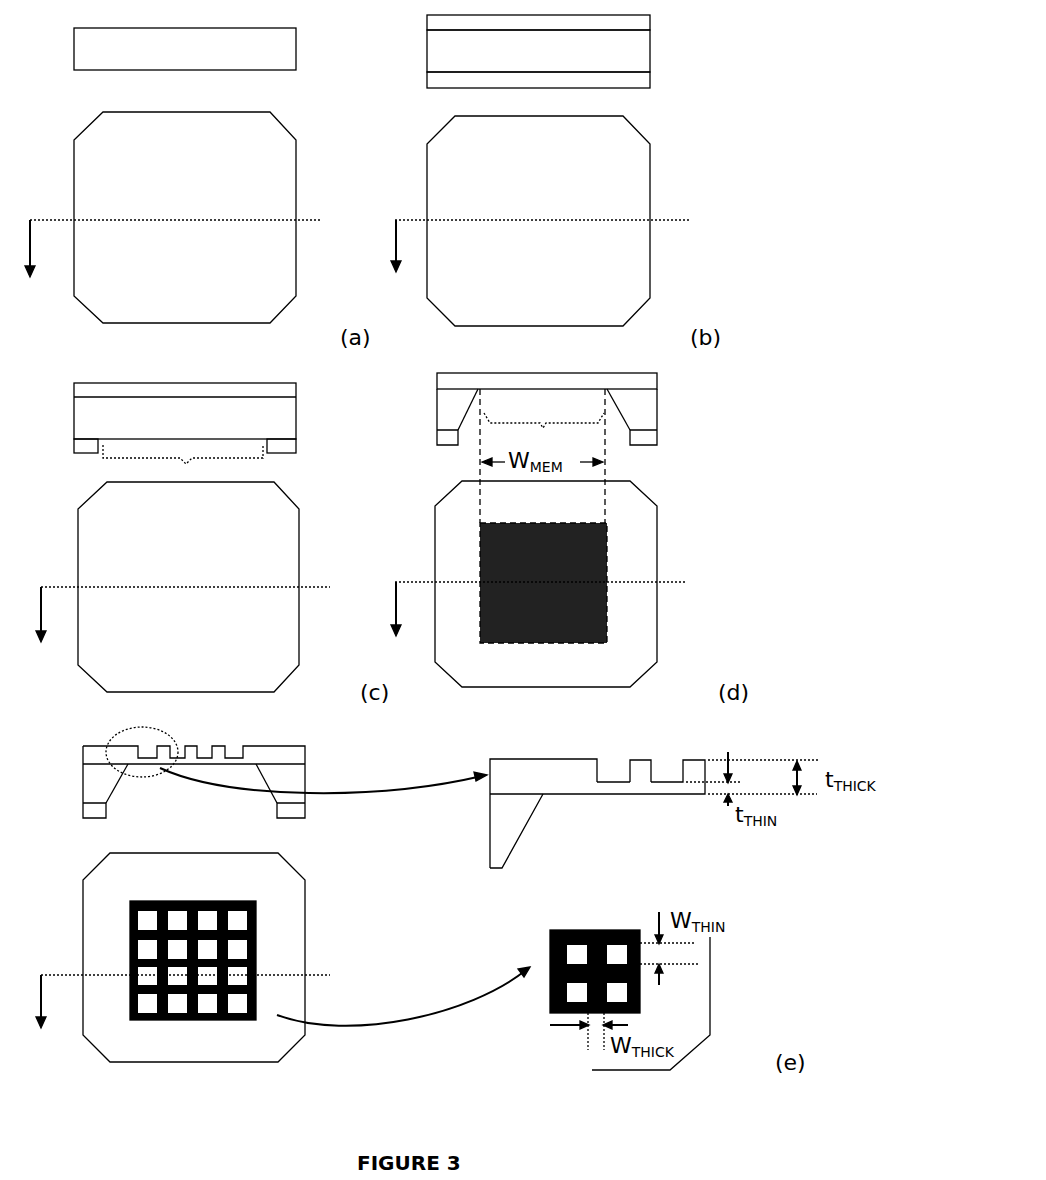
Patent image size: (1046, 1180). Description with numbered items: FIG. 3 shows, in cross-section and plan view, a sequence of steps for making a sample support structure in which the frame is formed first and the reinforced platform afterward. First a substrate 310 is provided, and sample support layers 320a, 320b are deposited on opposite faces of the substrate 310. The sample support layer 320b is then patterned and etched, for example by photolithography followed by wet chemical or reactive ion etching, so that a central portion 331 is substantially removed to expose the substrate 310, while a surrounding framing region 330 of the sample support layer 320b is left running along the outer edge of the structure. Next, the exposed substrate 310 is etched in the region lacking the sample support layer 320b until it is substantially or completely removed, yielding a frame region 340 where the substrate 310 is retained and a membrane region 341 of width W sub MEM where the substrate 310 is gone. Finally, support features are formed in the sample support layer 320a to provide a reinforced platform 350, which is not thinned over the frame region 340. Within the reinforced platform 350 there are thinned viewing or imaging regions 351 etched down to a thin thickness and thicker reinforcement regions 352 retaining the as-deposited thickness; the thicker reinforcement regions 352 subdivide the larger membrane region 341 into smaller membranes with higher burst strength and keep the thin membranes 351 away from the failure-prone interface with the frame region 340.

The substrate 310 is at (282, 57).
The sample support layer 320a is at (650, 24).
The sample support layer 320b is at (650, 80).
The framing region 330 is at (88, 443).
The removed portion 331 is at (186, 464).
The frame region 340 is at (457, 398).
The membrane region 341 is at (543, 428).
The reinforced platform 350 is at (305, 752).
The thinned viewing or imaging region 351 is at (615, 773).
The thicker reinforcement region 352 is at (642, 773).